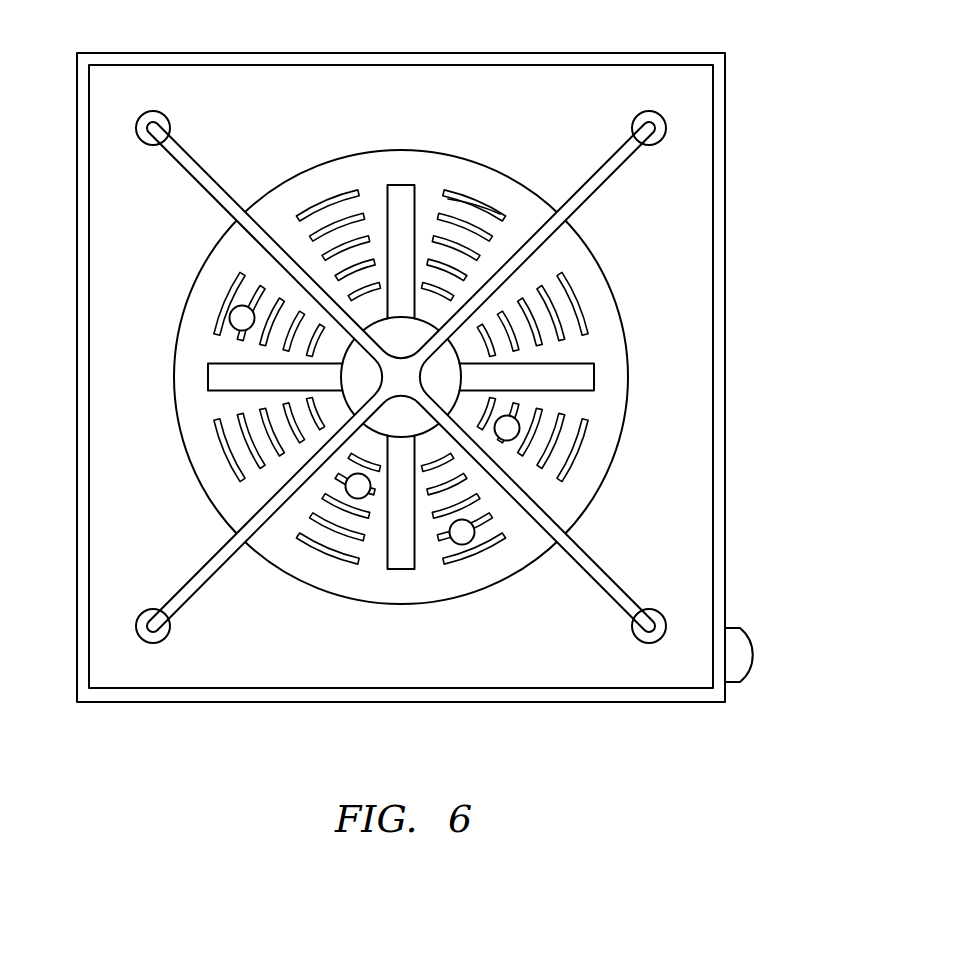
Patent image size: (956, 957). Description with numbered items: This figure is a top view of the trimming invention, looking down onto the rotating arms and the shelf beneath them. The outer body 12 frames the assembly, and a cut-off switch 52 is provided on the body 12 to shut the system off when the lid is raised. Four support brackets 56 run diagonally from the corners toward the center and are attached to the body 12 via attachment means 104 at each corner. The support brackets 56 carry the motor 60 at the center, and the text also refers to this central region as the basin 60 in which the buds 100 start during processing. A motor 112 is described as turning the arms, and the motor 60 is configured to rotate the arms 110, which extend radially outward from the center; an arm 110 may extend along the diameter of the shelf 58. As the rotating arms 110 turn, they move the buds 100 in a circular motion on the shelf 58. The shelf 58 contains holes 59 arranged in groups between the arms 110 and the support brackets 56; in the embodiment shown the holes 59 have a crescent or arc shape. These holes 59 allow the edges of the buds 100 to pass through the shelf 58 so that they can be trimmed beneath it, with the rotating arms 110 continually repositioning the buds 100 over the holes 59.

The body 12 is at (725, 197).
The cut-off switch 52 is at (745, 652).
The support brackets 56 is at (215, 192).
The shelf 58 is at (610, 325).
The holes 59 is at (399, 373).
The motor 60 is at (460, 213).
The buds 100 is at (246, 320).
The attachment means 104 is at (160, 112).
The rotating arms 110 is at (405, 190).
The motor 112 is at (362, 378).